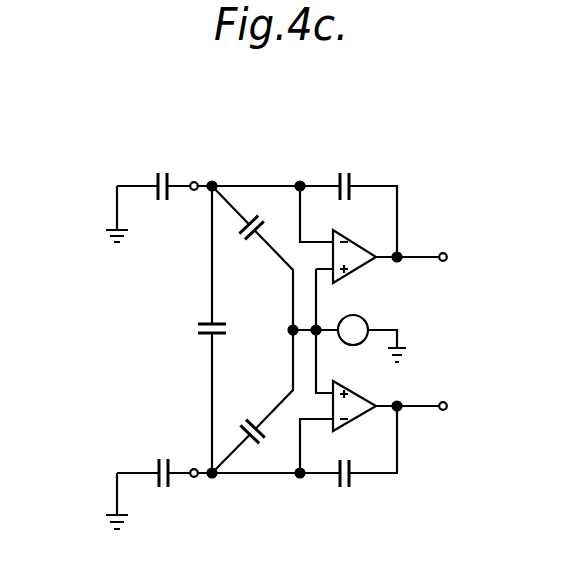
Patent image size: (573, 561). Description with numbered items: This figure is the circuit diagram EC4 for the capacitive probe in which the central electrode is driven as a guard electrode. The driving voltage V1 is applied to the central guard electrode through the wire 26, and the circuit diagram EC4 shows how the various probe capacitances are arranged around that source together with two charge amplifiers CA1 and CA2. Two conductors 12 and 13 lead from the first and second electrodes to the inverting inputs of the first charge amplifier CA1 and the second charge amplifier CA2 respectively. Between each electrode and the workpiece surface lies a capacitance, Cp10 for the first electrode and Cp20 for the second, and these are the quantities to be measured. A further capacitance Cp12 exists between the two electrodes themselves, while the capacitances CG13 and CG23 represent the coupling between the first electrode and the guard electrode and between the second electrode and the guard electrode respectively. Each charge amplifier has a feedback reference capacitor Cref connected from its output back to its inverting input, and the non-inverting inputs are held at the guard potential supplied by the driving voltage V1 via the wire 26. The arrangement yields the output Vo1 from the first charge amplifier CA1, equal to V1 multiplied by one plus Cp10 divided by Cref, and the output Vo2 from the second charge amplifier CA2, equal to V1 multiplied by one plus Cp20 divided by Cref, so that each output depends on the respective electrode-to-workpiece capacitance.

The first electrode conductor 12 is at (270, 185).
The second electrode conductor 13 is at (272, 476).
The wire 26 is at (303, 333).
The circuit diagram EC4 is at (337, 141).
The capacitance between electrode E1 and workpiece surface Cp10 is at (157, 182).
The capacitance between electrode E2 and workpiece surface Cp20 is at (170, 489).
The capacitance between the two electrodes Cp12 is at (200, 322).
The capacitance between electrode E1 and guard electrode G3 CG13 is at (250, 238).
The capacitance between electrode E2 and guard electrode G3 CG23 is at (252, 401).
The reference capacitor Cref is at (352, 183).
The first charge amplifier CA1 is at (373, 222).
The second charge amplifier CA2 is at (380, 447).
The driving voltage V1 is at (358, 325).
The output voltage of first charge amplifier Vo1 is at (465, 259).
The output voltage of second charge amplifier Vo2 is at (465, 407).